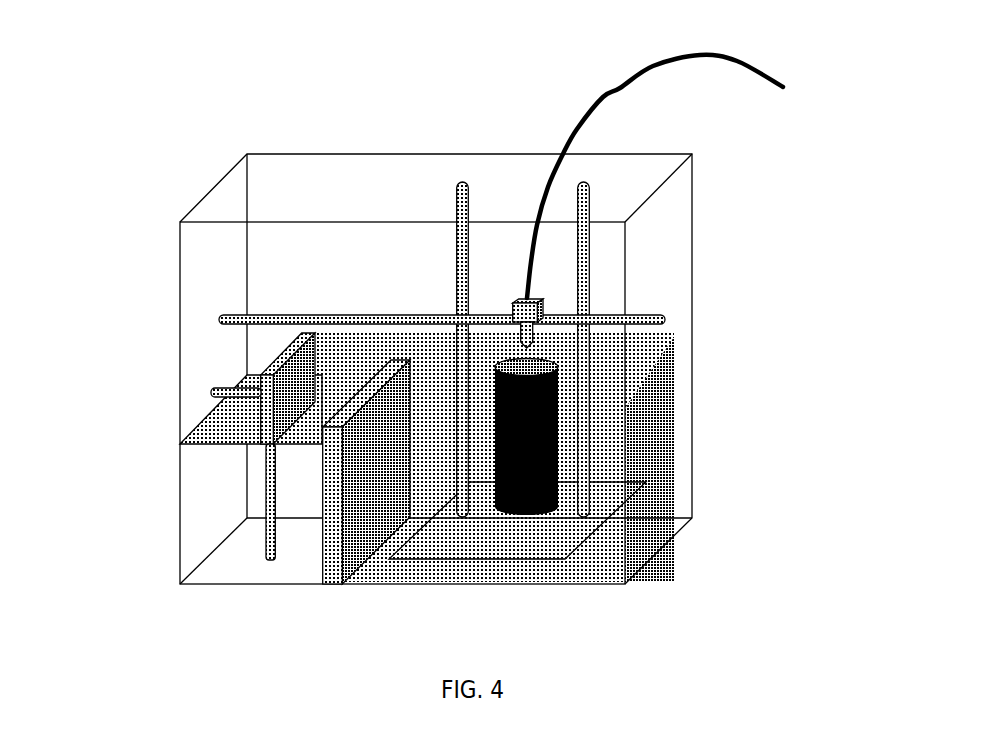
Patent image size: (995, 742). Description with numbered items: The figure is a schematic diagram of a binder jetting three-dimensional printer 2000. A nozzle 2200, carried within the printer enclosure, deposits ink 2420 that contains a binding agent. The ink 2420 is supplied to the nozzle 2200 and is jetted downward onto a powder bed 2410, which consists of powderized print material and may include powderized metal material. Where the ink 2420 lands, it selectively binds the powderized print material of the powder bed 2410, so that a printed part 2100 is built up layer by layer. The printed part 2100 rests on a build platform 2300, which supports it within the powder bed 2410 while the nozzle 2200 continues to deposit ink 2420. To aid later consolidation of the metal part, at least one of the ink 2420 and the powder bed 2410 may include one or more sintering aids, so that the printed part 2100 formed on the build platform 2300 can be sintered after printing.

The binder jetting 3D printer 2000 is at (96, 189).
The ink 2420 is at (572, 129).
The nozzle 2200 is at (533, 334).
The printed part 2100 is at (558, 390).
The powder bed 2410 is at (650, 445).
The build platform 2300 is at (587, 541).